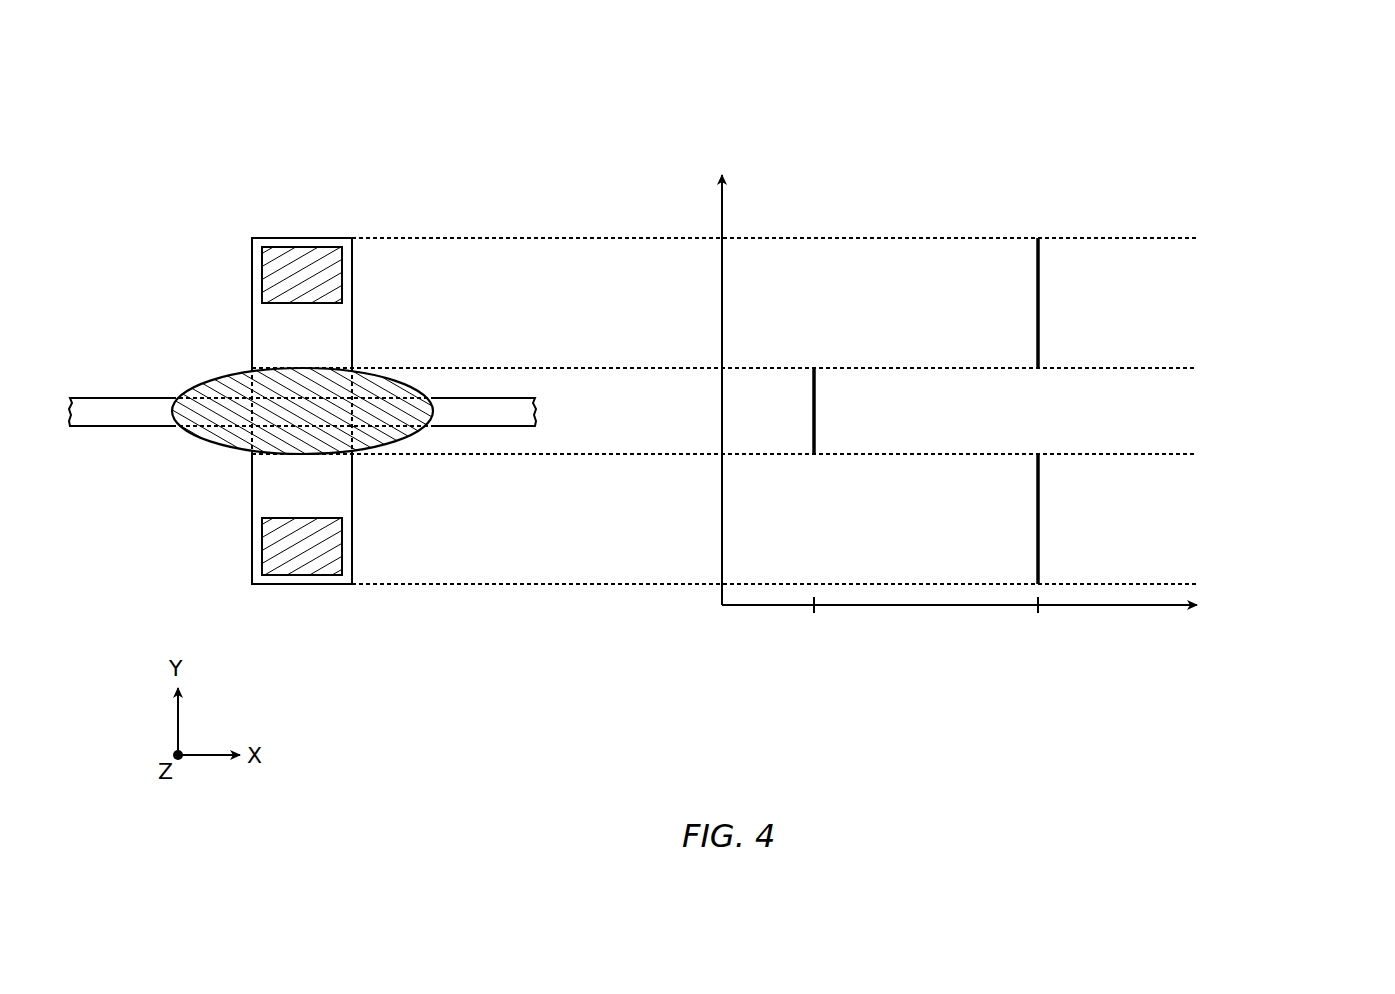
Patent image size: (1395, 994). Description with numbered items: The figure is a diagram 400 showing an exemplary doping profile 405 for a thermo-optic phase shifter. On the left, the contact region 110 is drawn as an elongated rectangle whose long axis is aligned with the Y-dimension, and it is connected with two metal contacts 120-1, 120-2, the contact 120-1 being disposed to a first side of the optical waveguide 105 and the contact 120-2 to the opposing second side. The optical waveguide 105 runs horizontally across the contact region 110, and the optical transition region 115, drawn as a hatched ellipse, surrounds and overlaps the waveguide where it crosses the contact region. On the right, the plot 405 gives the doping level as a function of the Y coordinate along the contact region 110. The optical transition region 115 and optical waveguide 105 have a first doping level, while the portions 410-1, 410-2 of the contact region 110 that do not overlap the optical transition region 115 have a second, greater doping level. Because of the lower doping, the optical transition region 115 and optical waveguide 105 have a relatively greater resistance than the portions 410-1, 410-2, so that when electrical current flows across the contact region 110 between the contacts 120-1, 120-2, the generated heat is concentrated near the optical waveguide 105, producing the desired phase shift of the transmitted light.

The diagram 400 is at (326, 188).
The doping profile 405 is at (1126, 186).
The optical waveguide 105 is at (118, 397).
The contact region 110 is at (281, 411).
The optical transition region 115 is at (213, 449).
The metal contact 120-1 is at (342, 272).
The metal contact 120-2 is at (342, 543).
The portion of the contact region 410-1 is at (244, 280).
The portion of the contact region 410-2 is at (244, 541).